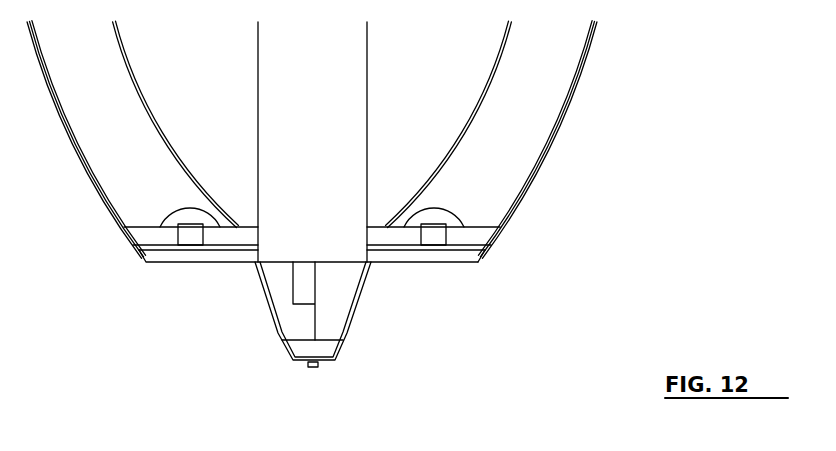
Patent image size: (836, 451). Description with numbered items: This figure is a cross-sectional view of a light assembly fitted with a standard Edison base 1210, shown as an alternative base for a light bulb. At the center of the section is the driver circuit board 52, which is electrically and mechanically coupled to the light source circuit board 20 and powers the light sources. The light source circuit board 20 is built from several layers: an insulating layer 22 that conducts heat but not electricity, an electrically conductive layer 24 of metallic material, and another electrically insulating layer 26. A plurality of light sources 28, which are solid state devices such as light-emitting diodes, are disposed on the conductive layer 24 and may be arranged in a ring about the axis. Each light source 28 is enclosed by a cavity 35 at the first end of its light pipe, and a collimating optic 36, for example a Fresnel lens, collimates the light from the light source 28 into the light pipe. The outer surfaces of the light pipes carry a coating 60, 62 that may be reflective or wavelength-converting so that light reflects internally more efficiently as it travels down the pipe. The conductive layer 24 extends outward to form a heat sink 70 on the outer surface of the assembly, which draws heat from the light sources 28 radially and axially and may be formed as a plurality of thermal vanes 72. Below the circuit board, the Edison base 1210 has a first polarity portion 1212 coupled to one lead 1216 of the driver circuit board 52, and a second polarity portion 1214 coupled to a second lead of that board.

The light source circuit board 20 is at (483, 252).
The insulating layer 22 is at (463, 255).
The conductive layer 24 is at (410, 248).
The electrically insulating layer 26 is at (375, 240).
The light source 28 is at (185, 234).
The cavity 35 is at (200, 230).
The collimating optic 36 is at (179, 214).
The driver circuit board 52 is at (292, 62).
The coating 60 is at (448, 147).
The coating 62 is at (527, 183).
The heat sink 70 is at (567, 135).
The thermal vanes 72 is at (593, 65).
The standard Edison base 1210 is at (348, 337).
The first polarity portion 1212 is at (307, 366).
The second polarity portion 1214 is at (275, 297).
The lead 1216 is at (292, 268).